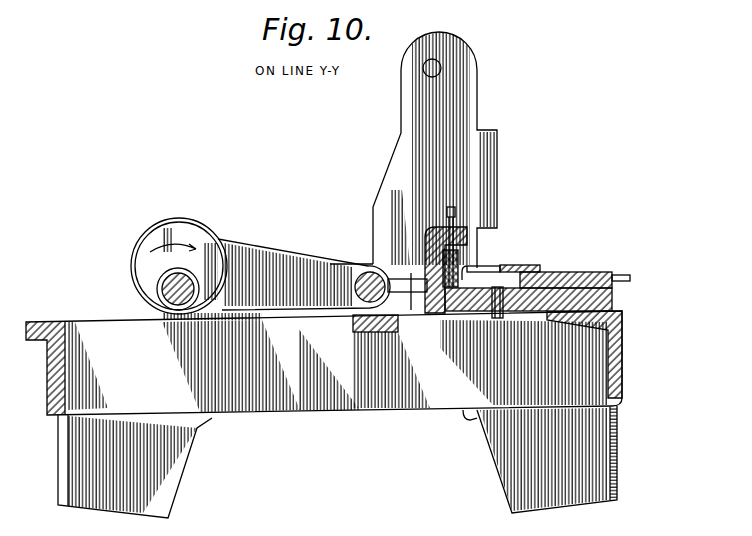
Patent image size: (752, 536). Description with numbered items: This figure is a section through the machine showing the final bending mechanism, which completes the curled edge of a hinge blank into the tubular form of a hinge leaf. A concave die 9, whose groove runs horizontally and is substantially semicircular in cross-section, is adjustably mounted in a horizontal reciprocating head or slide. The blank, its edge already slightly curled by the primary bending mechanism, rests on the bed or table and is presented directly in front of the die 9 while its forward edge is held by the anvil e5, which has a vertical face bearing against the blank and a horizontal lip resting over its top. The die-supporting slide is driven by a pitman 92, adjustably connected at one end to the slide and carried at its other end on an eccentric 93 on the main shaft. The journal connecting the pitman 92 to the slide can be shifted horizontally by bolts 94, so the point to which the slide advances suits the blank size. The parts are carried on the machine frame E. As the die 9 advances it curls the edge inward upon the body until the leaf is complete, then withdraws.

The concave die 9 is at (425, 268).
The pitman 92 is at (304, 274).
The eccentric 93 is at (204, 252).
The bolts 94 is at (386, 315).
The anvil e5 is at (527, 270).
The frame E is at (155, 313).